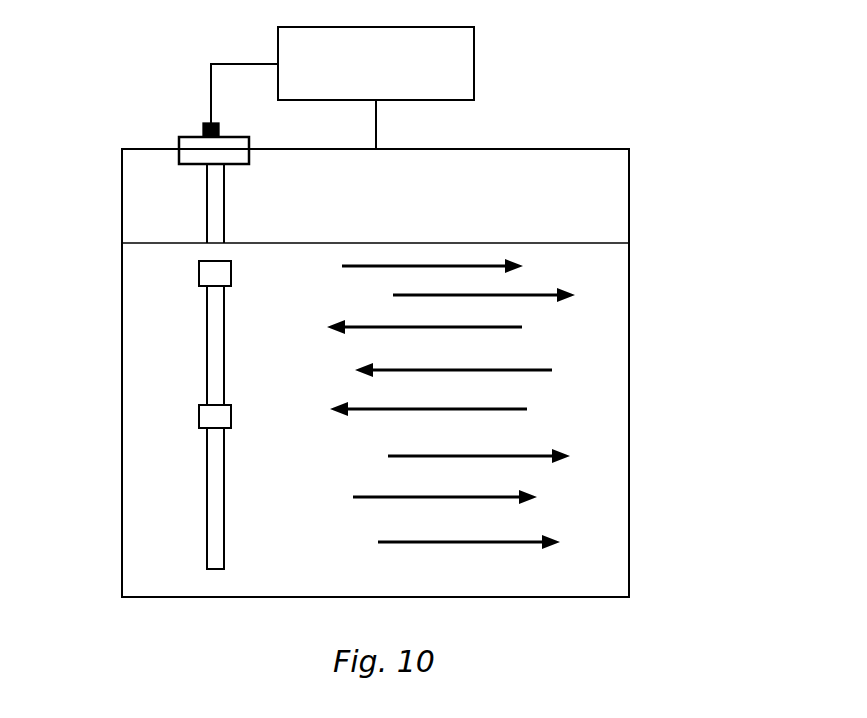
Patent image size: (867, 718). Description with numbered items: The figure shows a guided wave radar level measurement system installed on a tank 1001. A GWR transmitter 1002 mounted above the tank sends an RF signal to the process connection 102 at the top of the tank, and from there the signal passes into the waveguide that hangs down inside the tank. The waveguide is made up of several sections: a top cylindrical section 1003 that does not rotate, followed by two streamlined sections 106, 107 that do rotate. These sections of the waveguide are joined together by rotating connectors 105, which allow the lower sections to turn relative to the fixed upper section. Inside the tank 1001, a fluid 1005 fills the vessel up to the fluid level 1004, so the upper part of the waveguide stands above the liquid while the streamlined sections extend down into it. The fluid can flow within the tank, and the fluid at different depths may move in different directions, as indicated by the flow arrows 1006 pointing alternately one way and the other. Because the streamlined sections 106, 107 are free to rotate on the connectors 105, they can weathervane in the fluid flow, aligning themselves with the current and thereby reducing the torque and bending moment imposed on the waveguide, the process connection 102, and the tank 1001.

The tank 1001 is at (620, 152).
The GWR transmitter 1002 is at (342, 88).
The process connection 102 is at (181, 140).
The top cylindrical section 1003 is at (213, 194).
The rotating connectors 105 is at (210, 278).
The streamlined section 106 is at (215, 355).
The streamlined section 107 is at (215, 540).
The fluid level 1004 is at (575, 242).
The fluid 1005 is at (583, 572).
The flow arrows 1006 is at (550, 477).